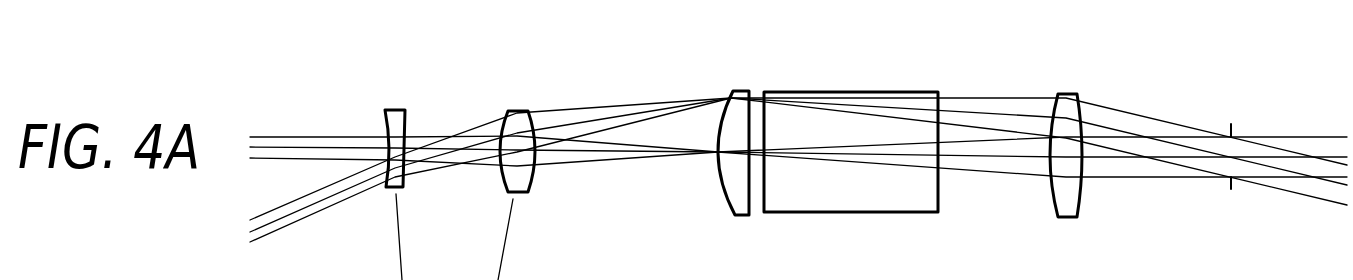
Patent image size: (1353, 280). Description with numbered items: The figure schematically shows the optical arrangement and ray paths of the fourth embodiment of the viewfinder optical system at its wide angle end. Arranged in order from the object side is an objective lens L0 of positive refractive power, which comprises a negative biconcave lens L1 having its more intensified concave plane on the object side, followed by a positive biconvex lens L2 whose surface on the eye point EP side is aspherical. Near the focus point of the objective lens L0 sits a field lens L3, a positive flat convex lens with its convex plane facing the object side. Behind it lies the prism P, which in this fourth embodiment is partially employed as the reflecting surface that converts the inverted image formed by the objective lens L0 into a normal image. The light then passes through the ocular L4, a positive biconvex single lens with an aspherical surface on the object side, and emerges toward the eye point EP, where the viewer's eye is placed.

The objective lens L0 is at (558, 54).
The negative biconcave lens L1 is at (398, 110).
The positive biconvex lens L2 is at (521, 110).
The field lens L3 is at (741, 90).
The prism P is at (880, 93).
The ocular L4 is at (1069, 93).
The eye point EP is at (1233, 144).